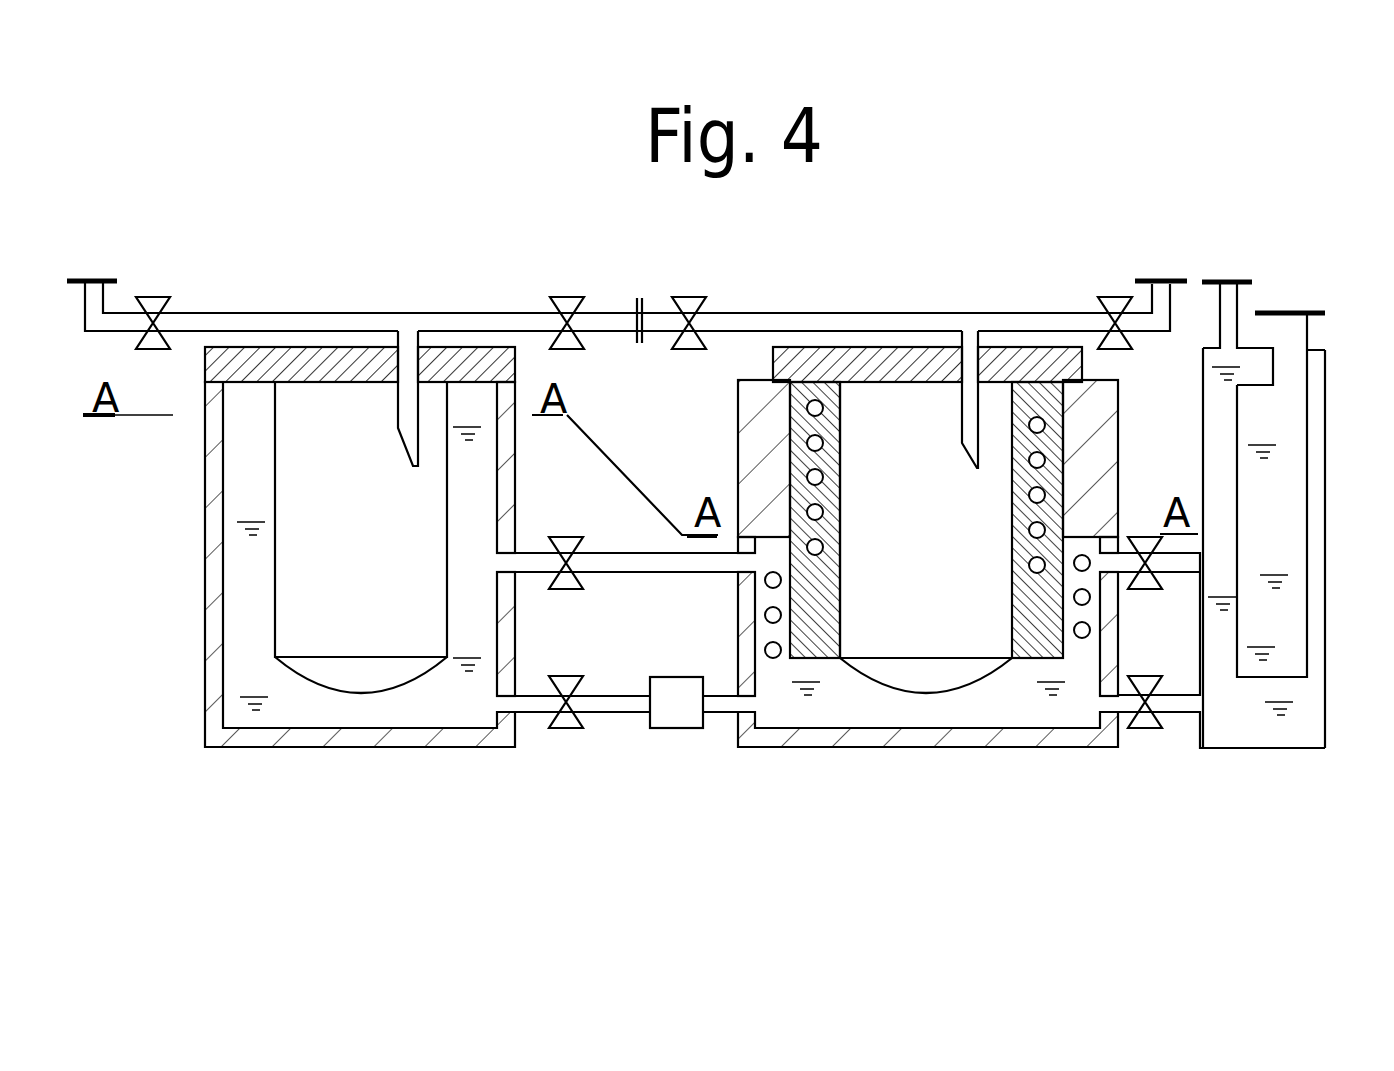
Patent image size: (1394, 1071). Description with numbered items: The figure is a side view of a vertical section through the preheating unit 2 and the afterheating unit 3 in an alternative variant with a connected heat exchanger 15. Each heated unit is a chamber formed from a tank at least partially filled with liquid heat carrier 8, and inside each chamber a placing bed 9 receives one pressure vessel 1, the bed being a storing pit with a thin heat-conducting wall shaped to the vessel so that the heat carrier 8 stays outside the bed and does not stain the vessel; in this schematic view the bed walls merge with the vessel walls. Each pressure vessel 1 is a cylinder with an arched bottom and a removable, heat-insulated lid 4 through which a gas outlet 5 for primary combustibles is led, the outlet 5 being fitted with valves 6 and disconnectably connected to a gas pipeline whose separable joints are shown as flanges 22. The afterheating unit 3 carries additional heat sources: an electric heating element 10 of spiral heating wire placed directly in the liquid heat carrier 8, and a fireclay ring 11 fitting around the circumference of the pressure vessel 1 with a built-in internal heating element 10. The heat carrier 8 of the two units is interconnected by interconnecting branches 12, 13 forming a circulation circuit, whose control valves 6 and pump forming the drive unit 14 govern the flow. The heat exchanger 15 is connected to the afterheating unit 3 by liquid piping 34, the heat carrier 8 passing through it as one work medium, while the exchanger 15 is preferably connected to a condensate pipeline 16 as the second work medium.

The pressure vessel 1 is at (432, 607).
The preheating unit 2 is at (205, 468).
The afterheating unit 3 is at (738, 450).
The removable lid 4 is at (296, 385).
The gas outlet 5 is at (398, 430).
The valve 6 is at (170, 302).
The liquid heat carrier 8 is at (458, 545).
The placing bed 9 is at (273, 560).
The electric heating element 10 is at (818, 512).
The fireclay ring 11 is at (843, 595).
The interconnecting branch 12 is at (612, 712).
The interconnecting branch 13 is at (633, 562).
The drive unit 14 is at (683, 728).
The heat exchanger 15 is at (1325, 497).
The condensate pipeline 16 is at (1300, 332).
The flange 22 is at (98, 282).
The liquid piping 34 is at (1187, 570).